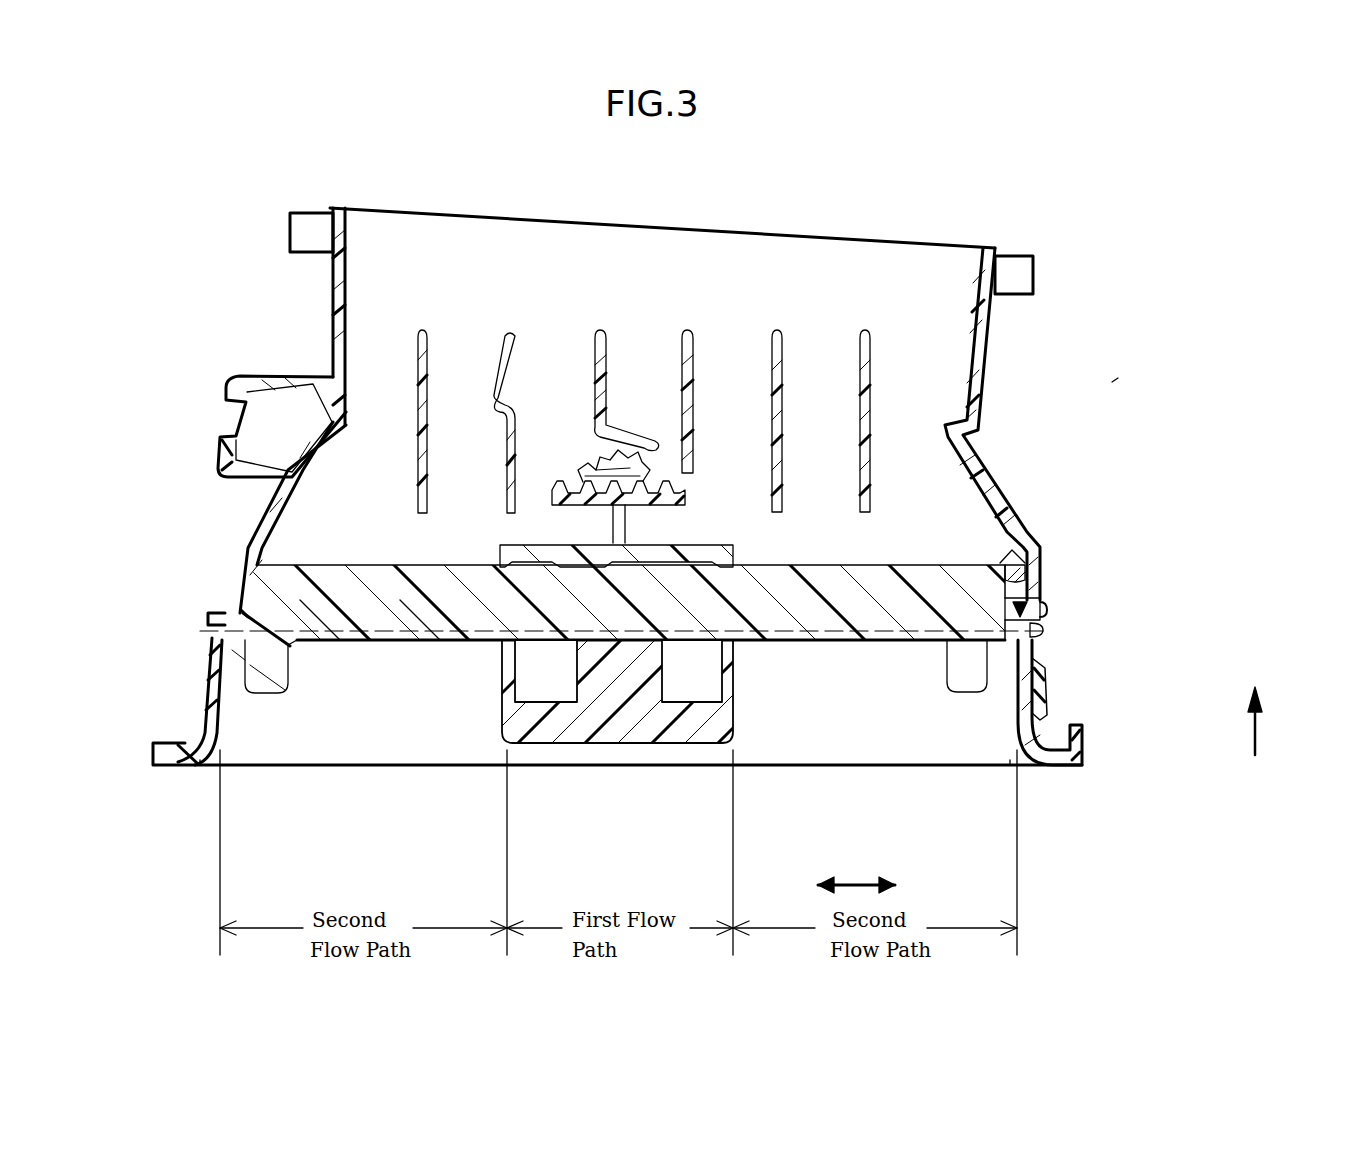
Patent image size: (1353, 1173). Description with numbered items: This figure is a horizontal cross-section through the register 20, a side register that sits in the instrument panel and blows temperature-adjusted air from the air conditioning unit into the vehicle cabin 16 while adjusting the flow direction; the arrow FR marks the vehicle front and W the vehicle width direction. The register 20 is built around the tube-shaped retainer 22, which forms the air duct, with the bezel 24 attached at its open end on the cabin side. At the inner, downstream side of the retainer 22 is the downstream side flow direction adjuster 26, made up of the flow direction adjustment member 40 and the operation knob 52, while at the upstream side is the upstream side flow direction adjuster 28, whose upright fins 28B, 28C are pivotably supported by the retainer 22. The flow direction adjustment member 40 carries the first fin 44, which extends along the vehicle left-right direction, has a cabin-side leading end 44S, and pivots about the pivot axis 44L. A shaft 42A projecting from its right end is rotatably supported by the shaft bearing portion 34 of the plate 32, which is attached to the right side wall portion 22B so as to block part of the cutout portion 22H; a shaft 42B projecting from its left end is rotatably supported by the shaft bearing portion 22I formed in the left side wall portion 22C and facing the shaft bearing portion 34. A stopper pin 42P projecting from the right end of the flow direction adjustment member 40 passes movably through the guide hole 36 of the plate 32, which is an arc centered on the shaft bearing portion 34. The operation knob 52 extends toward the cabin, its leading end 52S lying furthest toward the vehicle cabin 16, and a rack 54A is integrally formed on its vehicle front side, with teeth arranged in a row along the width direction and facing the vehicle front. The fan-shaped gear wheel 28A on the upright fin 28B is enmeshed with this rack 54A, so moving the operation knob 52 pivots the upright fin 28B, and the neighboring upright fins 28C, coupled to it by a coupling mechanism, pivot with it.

The vehicle cabin 16 is at (585, 855).
The register 20 is at (1115, 380).
The retainer 22 is at (1025, 468).
The side wall portion 22B is at (1020, 522).
The side wall portion 22C is at (245, 545).
The cutout portion 22H is at (1040, 614).
The shaft bearing portion 22I is at (210, 620).
The bezel 24 is at (1040, 770).
The downstream side flow direction adjuster 26 is at (905, 698).
The upstream side flow direction adjuster 28 is at (928, 383).
The fan-shaped gear wheel 28A is at (655, 462).
The upright fin 28B is at (606, 372).
The upright fins 28C is at (505, 347).
The plate 32 is at (1040, 660).
The shaft bearing portion 34 is at (1042, 635).
The guide hole 36 is at (1035, 580).
The flow direction adjustment member 40 is at (838, 646).
The shaft 42A is at (965, 652).
The shaft 42B is at (222, 660).
The stopper pin 42P is at (1036, 597).
The first fin 44 is at (400, 642).
The leading end 44S is at (345, 645).
The pivot axis 44L is at (440, 642).
The operation knob 52 is at (737, 712).
The leading end 52S is at (665, 745).
The rack 54A is at (685, 497).
The width direction W is at (855, 885).
The front direction FR is at (1253, 704).